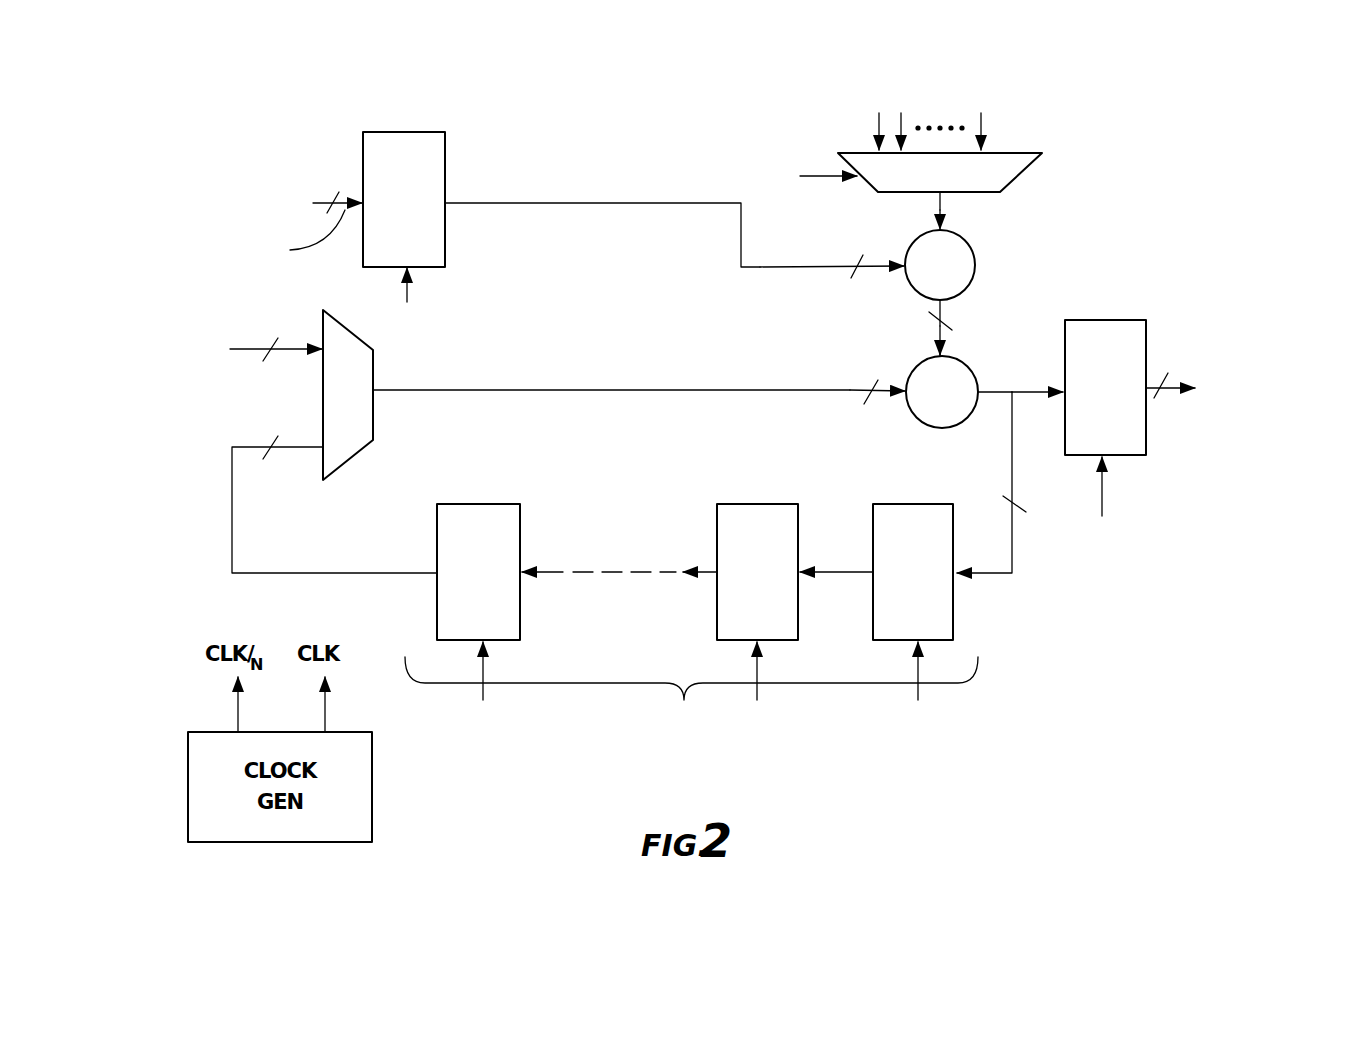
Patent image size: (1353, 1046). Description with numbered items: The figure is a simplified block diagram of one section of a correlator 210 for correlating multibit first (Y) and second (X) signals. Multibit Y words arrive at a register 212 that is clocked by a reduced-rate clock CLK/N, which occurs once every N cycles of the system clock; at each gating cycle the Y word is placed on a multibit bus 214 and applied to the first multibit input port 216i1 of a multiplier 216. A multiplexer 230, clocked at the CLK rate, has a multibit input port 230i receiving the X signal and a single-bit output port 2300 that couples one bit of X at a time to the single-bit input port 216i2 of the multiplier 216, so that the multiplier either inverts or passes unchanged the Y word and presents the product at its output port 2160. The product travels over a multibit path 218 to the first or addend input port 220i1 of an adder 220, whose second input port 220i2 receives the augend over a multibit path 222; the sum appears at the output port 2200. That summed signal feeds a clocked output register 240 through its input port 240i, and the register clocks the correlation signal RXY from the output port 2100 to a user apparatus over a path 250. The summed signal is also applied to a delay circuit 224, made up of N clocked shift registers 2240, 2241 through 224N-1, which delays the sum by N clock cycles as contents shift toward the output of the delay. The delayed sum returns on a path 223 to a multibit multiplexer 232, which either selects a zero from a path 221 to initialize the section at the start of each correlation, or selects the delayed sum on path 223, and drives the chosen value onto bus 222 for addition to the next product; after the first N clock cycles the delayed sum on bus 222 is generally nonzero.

The correlator 210 is at (470, 795).
The output port 2100 is at (1148, 395).
The register 212 is at (445, 148).
The multibit bus 214 is at (640, 200).
The multiplier 216 is at (977, 257).
The multibit input port 216i1 is at (900, 271).
The single-bit input port 216i2 is at (927, 232).
The output port 2160 is at (948, 298).
The multibit path 218 is at (936, 338).
The adder 220 is at (924, 427).
The first input port 220i1 is at (951, 355).
The second input port 220i2 is at (907, 382).
The output port 2200 is at (976, 407).
The path 221 is at (292, 352).
The multibit path 222 is at (670, 392).
The path 223 is at (233, 550).
The delay circuit 224 is at (691, 698).
The clocked register 224N-1 is at (556, 619).
The clocked register 2241 is at (717, 607).
The shift register 2240 is at (955, 598).
The multiplexer 230 is at (1022, 169).
The multibit input port 230i is at (995, 146).
The single-bit output port 2300 is at (947, 196).
The multiplexer 232 is at (375, 368).
The output register 240 is at (1109, 318).
The input port 240i is at (1062, 397).
The path 250 is at (1163, 394).